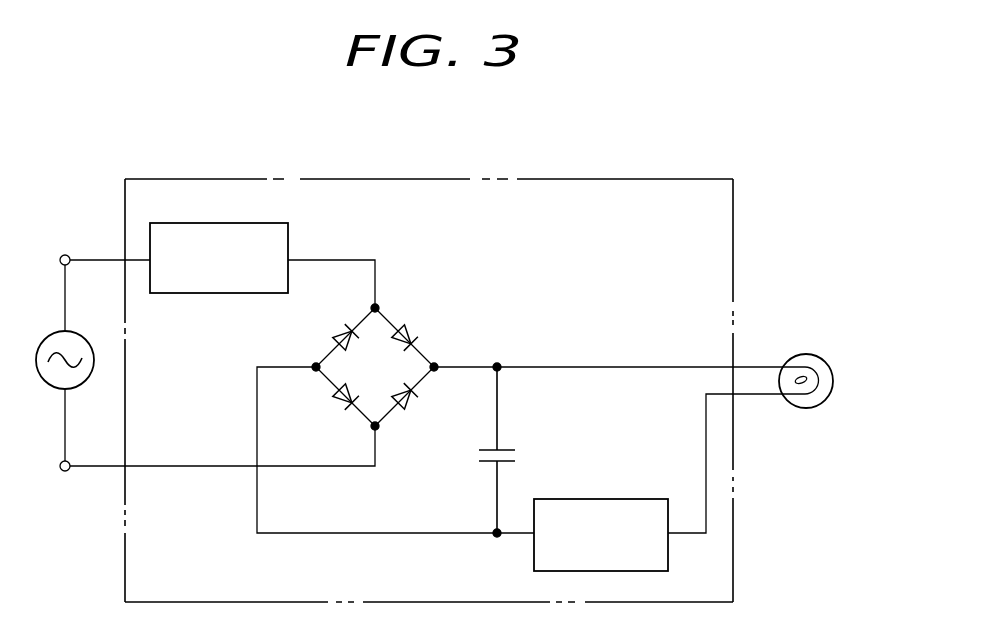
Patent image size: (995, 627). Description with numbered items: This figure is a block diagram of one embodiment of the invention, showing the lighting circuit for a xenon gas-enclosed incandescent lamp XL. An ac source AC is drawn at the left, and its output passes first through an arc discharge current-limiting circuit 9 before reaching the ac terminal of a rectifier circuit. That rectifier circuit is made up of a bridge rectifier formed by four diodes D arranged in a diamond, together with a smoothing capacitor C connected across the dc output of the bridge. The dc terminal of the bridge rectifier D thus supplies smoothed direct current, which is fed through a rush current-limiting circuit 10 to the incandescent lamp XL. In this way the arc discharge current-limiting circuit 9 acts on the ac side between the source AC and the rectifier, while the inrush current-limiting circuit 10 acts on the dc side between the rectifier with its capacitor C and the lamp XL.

The arc discharge current-limiting circuit 9 is at (288, 237).
The inrush current-limiting circuit 10 is at (622, 499).
The diode D is at (380, 366).
The capacitor C is at (508, 450).
The incandescent lamp XL is at (825, 381).
The ac source AC is at (58, 363).